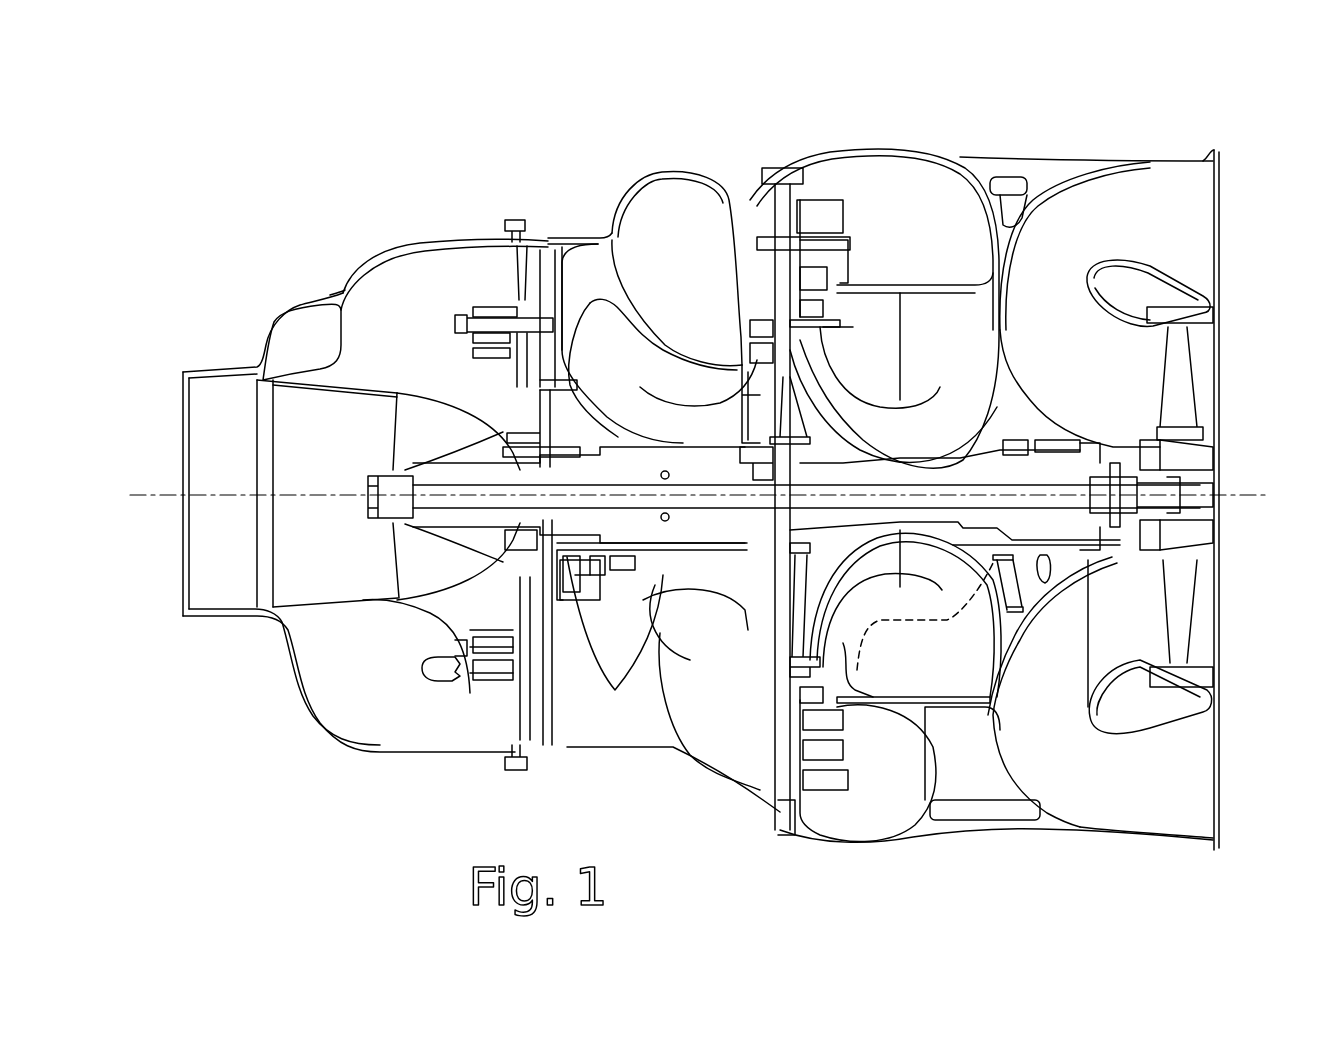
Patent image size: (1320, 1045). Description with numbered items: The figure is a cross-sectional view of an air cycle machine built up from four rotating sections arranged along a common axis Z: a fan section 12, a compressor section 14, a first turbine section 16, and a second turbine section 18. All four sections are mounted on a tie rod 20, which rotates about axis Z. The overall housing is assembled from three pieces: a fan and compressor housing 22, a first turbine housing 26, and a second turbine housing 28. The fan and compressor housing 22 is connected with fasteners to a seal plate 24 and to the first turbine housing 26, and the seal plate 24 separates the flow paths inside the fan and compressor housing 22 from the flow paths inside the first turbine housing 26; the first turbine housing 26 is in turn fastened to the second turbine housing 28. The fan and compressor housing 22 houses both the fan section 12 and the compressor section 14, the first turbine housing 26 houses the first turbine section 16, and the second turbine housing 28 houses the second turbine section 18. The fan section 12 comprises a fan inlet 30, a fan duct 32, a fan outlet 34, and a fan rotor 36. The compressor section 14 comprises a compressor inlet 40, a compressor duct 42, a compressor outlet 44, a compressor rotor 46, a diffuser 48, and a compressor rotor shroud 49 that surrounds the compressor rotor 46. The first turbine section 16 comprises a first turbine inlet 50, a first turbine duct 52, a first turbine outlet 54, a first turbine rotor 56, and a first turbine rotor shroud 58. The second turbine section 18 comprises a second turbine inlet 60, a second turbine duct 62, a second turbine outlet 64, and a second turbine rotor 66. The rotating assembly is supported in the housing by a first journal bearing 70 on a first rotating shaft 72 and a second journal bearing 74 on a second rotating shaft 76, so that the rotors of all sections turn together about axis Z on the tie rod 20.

The fan section 12 is at (1153, 135).
The compressor section 14 is at (859, 140).
The first turbine section 16 is at (645, 133).
The second turbine section 18 is at (333, 160).
The tie rod 20 is at (1043, 490).
The fan and compressor housing 22 is at (1047, 173).
The seal plate 24 is at (773, 200).
The first turbine housing 26 is at (560, 243).
The second turbine housing 28 is at (343, 292).
The fan inlet 30 is at (1185, 190).
The fan duct 32 is at (1080, 304).
The fan outlet 34 is at (1190, 370).
The fan rotor 36 is at (1175, 376).
The compressor inlet 40 is at (900, 343).
The compressor duct 42 is at (996, 687).
The compressor outlet 44 is at (896, 200).
The compressor rotor 46 is at (862, 570).
The diffuser 48 is at (818, 215).
The compressor rotor shroud 49 is at (904, 400).
The first turbine inlet 50 is at (668, 207).
The first turbine duct 52 is at (677, 269).
The first turbine outlet 54 is at (592, 260).
The first turbine rotor 56 is at (724, 420).
The first turbine rotor shroud 58 is at (740, 337).
The second turbine inlet 60 is at (414, 287).
The second turbine duct 62 is at (432, 652).
The second turbine outlet 64 is at (310, 420).
The second turbine rotor 66 is at (450, 566).
The first journal bearing 70 is at (1100, 553).
The first rotating shaft 72 is at (1090, 549).
The second journal bearing 74 is at (613, 552).
The second rotating shaft 76 is at (560, 546).